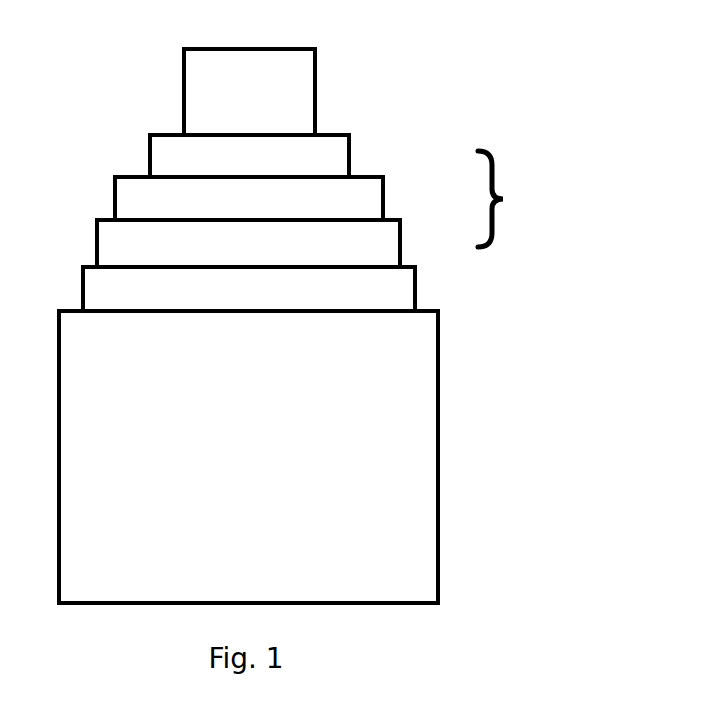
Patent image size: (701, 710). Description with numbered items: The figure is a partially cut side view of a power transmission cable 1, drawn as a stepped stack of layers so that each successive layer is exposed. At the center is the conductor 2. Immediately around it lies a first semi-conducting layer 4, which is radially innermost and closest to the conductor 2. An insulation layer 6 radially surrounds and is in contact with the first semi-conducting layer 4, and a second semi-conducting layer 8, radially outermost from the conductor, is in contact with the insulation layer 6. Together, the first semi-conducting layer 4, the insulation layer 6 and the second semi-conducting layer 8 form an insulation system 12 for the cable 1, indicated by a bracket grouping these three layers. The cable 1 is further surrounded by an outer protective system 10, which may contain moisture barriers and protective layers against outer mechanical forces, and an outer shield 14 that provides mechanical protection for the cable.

The power transmission cable 1 is at (477, 83).
The conductor 2 is at (315, 102).
The first semi-conducting layer 4 is at (349, 167).
The insulation layer 6 is at (383, 197).
The second semi-conducting layer 8 is at (373, 237).
The outer protective system 10 is at (415, 293).
The insulation system 12 is at (503, 199).
The outer shield 14 is at (436, 450).